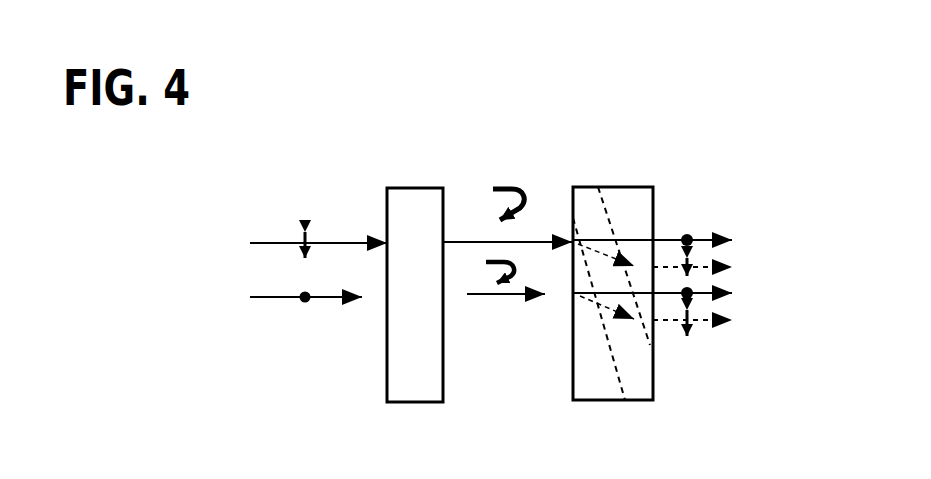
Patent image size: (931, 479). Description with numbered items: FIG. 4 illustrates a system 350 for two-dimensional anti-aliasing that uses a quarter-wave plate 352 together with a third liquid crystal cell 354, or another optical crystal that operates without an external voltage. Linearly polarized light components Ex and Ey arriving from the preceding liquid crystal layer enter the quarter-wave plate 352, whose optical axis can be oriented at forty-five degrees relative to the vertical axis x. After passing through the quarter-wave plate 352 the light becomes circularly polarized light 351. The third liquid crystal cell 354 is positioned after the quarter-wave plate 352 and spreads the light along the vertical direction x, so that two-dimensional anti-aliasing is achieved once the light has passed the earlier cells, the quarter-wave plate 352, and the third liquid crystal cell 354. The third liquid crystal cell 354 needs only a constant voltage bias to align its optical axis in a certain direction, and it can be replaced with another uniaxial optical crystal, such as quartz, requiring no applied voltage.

The system for two-dimensional anti-aliasing 350 is at (128, 140).
The circularly polarized light 351 is at (505, 187).
The quarter-wave plate 352 is at (406, 188).
The third liquid crystal cell 354 is at (618, 187).